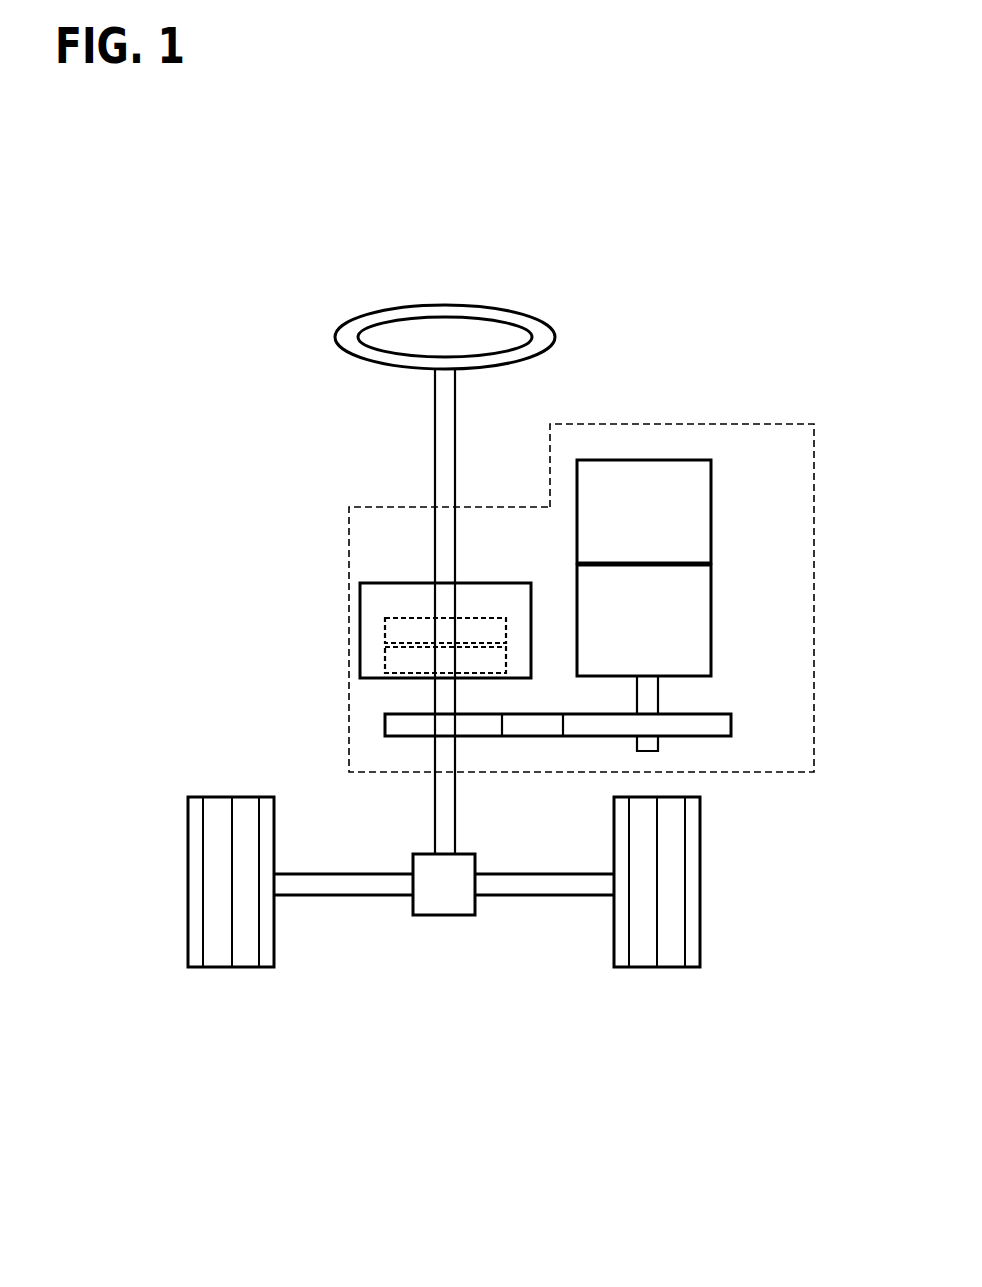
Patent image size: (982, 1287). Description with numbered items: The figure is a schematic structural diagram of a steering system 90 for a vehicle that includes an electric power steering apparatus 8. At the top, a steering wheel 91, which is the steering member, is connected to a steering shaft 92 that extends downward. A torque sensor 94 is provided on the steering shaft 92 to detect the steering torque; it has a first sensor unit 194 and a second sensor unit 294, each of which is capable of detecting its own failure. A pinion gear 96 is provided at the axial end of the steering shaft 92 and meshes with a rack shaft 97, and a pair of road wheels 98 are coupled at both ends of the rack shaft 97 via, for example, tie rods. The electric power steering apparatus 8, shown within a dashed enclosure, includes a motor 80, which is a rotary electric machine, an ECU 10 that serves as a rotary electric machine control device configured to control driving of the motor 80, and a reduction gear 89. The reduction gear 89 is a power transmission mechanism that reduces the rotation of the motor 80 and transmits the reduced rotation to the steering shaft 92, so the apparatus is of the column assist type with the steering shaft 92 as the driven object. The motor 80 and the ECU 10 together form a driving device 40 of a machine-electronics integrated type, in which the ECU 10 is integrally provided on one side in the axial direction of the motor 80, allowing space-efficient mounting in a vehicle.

The electric power steering apparatus 8 is at (760, 424).
The ECU 10 is at (712, 490).
The driving device 40 is at (723, 657).
The motor 80 is at (712, 597).
The reduction gear 89 is at (732, 722).
The steering system 90 is at (404, 1045).
The steering wheel 91 is at (335, 338).
The steering shaft 92 is at (434, 430).
The torque sensor 94 is at (385, 583).
The pinion gear 96 is at (434, 916).
The rack shaft 97 is at (336, 896).
The road wheels 98 is at (248, 968).
The first sensor unit 194 is at (385, 628).
The second sensor unit 294 is at (385, 662).